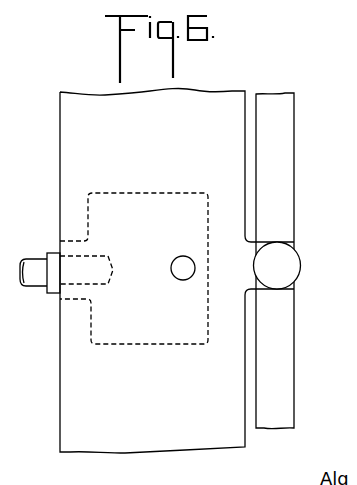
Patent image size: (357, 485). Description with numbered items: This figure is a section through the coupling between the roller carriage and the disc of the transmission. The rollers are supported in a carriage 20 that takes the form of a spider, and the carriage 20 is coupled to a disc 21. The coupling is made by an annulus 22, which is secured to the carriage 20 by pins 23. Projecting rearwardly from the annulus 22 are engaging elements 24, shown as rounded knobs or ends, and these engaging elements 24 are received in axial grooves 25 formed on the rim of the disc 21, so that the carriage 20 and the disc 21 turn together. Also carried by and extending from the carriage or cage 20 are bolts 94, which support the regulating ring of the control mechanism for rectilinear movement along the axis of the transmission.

The carriage 20 is at (120, 197).
The disc 21 is at (280, 208).
The annulus 22 is at (210, 100).
The pins 23 is at (178, 261).
The engaging elements 24 is at (291, 266).
The axial grooves 25 is at (290, 292).
The bolts 94 is at (35, 279).